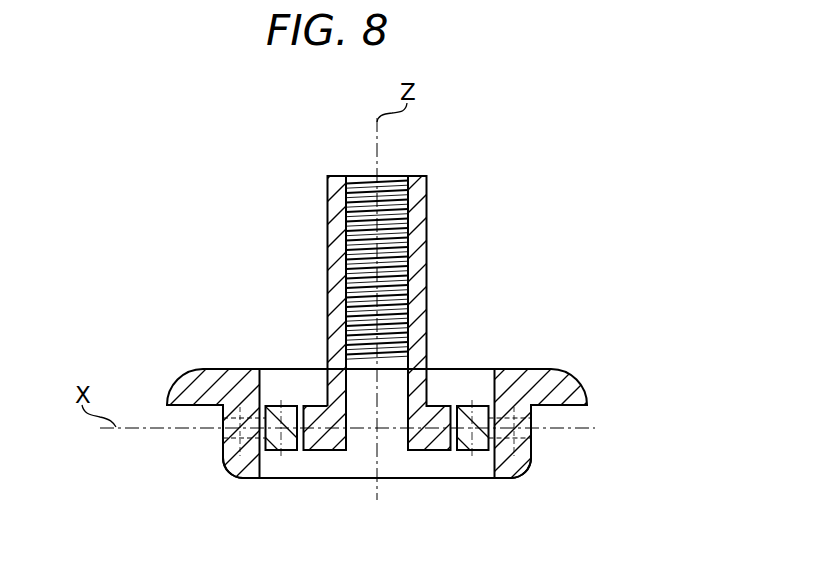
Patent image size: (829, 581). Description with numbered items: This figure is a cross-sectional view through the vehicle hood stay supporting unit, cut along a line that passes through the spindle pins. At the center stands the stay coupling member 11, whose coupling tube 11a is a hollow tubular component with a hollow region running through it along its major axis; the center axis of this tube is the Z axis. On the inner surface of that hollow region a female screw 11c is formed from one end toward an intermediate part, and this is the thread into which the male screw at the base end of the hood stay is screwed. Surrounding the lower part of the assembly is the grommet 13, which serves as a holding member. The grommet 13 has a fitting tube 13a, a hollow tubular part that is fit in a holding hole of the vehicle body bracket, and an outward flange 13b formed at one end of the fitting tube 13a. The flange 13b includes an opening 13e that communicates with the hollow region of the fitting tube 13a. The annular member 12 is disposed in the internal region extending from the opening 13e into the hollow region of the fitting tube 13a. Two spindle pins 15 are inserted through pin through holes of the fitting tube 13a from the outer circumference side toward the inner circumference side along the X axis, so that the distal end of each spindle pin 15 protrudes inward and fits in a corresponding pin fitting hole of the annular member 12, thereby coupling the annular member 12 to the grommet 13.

The stay coupling member 11 is at (510, 198).
The coupling tube 11a is at (421, 217).
The female screw 11c is at (389, 196).
The annular member 12 is at (472, 423).
The grommet 13 is at (237, 289).
The fitting tube 13a is at (176, 380).
The flange 13b is at (243, 392).
The opening 13e is at (277, 379).
The spindle pin 15 is at (216, 463).